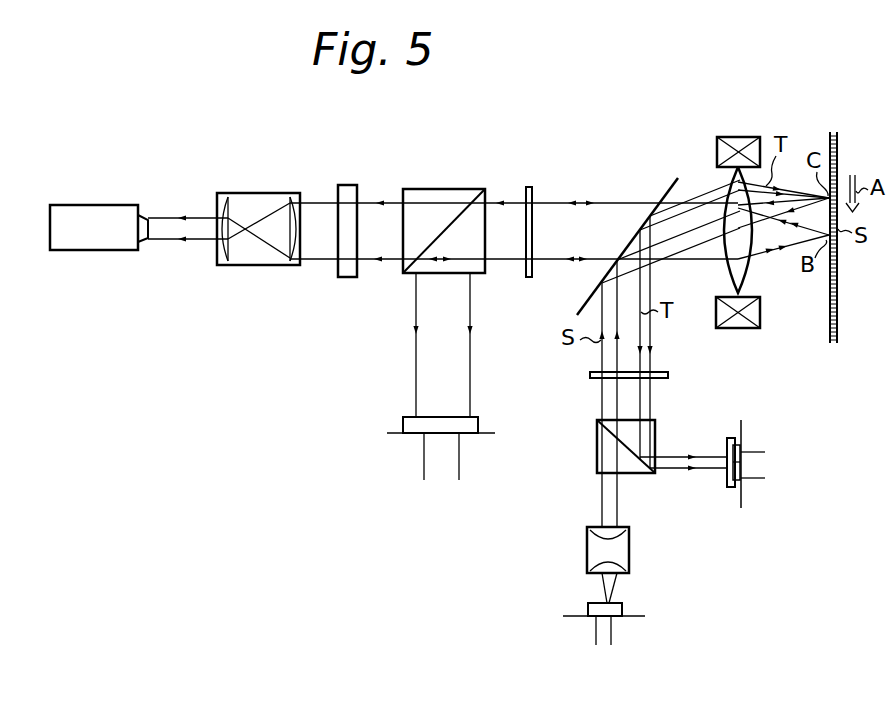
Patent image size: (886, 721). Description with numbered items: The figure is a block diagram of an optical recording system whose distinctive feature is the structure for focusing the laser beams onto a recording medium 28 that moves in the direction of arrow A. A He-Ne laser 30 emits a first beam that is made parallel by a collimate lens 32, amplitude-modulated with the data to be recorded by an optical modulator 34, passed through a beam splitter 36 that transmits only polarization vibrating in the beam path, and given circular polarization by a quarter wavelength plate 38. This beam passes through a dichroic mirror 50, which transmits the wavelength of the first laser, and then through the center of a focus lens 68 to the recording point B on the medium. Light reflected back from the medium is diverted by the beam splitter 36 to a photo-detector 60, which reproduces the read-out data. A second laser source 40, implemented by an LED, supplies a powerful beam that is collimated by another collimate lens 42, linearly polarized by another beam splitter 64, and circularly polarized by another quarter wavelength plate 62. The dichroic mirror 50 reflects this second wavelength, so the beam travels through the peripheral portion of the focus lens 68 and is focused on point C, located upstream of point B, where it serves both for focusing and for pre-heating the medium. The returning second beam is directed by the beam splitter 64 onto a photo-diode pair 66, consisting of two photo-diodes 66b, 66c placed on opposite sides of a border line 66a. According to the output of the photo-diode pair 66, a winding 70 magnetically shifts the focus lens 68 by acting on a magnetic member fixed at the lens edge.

The recording medium 28 is at (838, 141).
The He-Ne laser 30 is at (100, 205).
The collimate lens 32 is at (264, 193).
The optical modulator 34 is at (349, 185).
The beam splitter 36 is at (447, 189).
The 1/4 wavelength plate 38 is at (530, 187).
The second laser source 40 is at (640, 619).
The collimate lens 42 is at (587, 552).
The dichroic mirror 50 is at (670, 176).
The photo-detector 60 is at (393, 433).
The 1/4 wavelength plate 62 is at (668, 374).
The beam splitter 64 is at (597, 442).
The photo-diode pair 66 is at (751, 466).
The border line 66a is at (745, 468).
The photo-diode 66b is at (727, 438).
The photo-diode 66c is at (727, 488).
The focus lens 68 is at (730, 284).
The winding 70 is at (750, 137).